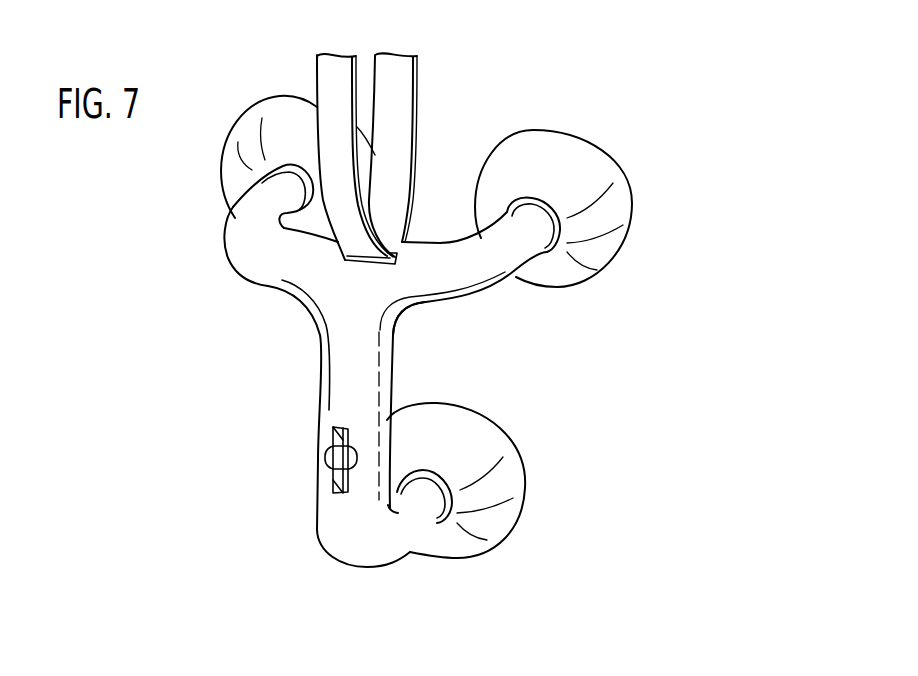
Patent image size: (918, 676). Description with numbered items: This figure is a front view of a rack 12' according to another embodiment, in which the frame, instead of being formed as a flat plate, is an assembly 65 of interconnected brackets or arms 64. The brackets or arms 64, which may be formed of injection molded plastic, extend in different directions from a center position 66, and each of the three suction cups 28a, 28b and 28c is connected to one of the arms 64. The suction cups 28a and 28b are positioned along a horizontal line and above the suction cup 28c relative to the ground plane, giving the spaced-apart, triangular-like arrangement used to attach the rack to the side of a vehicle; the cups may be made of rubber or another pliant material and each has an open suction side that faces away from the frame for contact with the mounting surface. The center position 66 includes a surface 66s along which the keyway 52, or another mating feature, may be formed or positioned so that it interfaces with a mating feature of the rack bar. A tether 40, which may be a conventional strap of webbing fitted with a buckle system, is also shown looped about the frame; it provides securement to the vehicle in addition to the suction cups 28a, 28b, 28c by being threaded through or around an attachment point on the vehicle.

The rack 12' is at (441, 318).
The suction cup 28a is at (285, 117).
The suction cup 28b is at (573, 165).
The suction cup 28c is at (493, 522).
The tether 40 is at (398, 128).
The keyway 52 is at (326, 457).
The brackets or arms 64 is at (272, 258).
The assembly of interconnected brackets or arms 65 is at (423, 353).
The center position 66 is at (343, 381).
The surface 66s is at (347, 343).